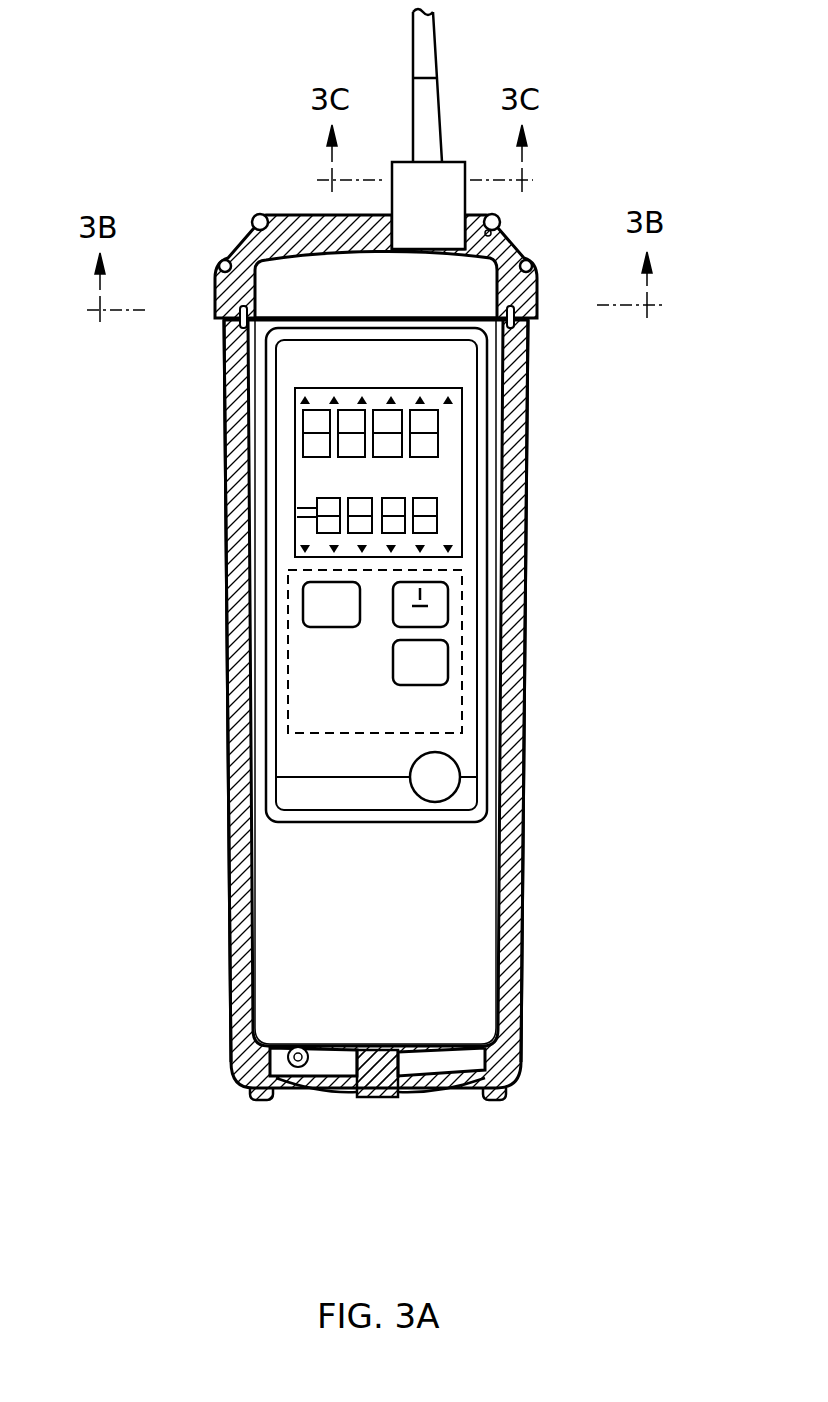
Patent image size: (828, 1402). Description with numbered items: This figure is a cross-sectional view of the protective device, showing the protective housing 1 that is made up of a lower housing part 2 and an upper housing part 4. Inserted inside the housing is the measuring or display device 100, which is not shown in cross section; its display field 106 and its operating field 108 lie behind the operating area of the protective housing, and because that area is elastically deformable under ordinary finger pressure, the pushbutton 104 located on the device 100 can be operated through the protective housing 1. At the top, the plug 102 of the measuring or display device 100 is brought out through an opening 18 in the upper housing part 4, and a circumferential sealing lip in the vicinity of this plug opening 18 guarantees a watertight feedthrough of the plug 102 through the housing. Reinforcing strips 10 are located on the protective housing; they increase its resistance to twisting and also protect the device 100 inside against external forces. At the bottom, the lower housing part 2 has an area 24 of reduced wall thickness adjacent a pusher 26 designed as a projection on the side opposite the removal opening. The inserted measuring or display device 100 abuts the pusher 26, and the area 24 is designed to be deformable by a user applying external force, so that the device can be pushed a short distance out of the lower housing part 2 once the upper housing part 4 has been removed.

The protective housing 1 is at (572, 690).
The lower housing part 2 is at (513, 911).
The upper housing part 4 is at (502, 222).
The reinforcing strips 10 is at (257, 217).
The opening 18 is at (392, 240).
The area of reduced wall thickness 24 is at (423, 1093).
The pusher 26 is at (378, 1085).
The measuring or display device 100 is at (448, 990).
The plug 102 is at (425, 110).
The pushbutton 104 is at (442, 593).
The display field 106 is at (293, 463).
The operating field 108 is at (290, 702).